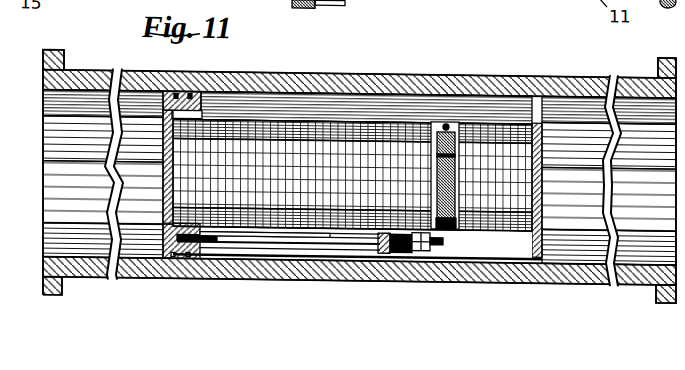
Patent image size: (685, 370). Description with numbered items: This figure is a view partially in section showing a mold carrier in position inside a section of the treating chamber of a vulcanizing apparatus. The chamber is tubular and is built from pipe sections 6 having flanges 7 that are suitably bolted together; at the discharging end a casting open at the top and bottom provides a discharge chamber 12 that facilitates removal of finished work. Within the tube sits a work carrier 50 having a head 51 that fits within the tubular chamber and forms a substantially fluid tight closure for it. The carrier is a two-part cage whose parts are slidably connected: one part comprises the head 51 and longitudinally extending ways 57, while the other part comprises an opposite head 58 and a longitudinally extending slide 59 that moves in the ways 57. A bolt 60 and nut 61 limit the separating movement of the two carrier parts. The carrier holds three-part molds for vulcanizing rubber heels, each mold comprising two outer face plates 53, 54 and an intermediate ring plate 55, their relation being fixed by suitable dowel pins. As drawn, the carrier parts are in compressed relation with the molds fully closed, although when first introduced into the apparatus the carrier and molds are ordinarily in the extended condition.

The pipe section 6 is at (585, 269).
The flange 7 is at (665, 58).
The discharge chamber 12 is at (449, 64).
The work carrier 50 is at (267, 244).
The head 51 is at (165, 191).
The outer face plate 53 is at (433, 147).
The outer face plate 54 is at (455, 154).
The intermediate ring plate 55 is at (443, 117).
The longitudinally extending ways 57 is at (305, 226).
The opposite head 58 is at (543, 190).
The longitudinally extending slide 59 is at (498, 238).
The bolt 60 is at (221, 237).
The nut 61 is at (416, 239).